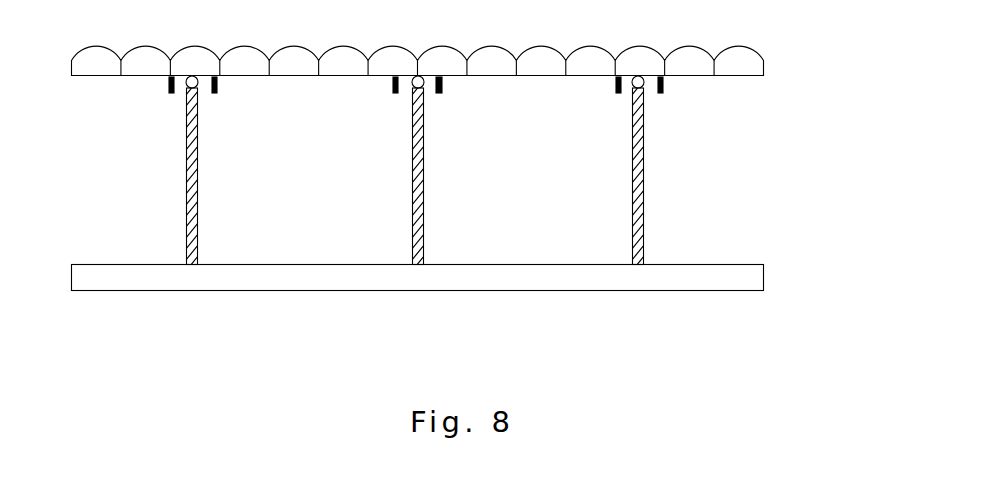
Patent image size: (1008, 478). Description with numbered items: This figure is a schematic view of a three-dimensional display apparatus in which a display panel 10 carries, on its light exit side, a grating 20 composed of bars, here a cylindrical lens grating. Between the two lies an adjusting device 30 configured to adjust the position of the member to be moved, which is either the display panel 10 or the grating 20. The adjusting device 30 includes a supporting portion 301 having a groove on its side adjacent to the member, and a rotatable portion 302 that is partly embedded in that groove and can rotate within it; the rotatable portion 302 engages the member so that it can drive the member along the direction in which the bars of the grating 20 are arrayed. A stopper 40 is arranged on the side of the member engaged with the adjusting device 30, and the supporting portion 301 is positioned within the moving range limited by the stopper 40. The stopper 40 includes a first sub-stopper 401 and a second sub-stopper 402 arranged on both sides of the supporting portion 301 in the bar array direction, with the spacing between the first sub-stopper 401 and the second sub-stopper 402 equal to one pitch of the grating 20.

The display panel 10 is at (737, 274).
The grating 20 is at (776, 72).
The adjusting device 30 is at (696, 173).
The supporting portion 301 is at (636, 150).
The rotatable portion 302 is at (642, 85).
The stopper 40 is at (146, 114).
The first sub-stopper 401 is at (169, 90).
The second sub-stopper 402 is at (212, 92).